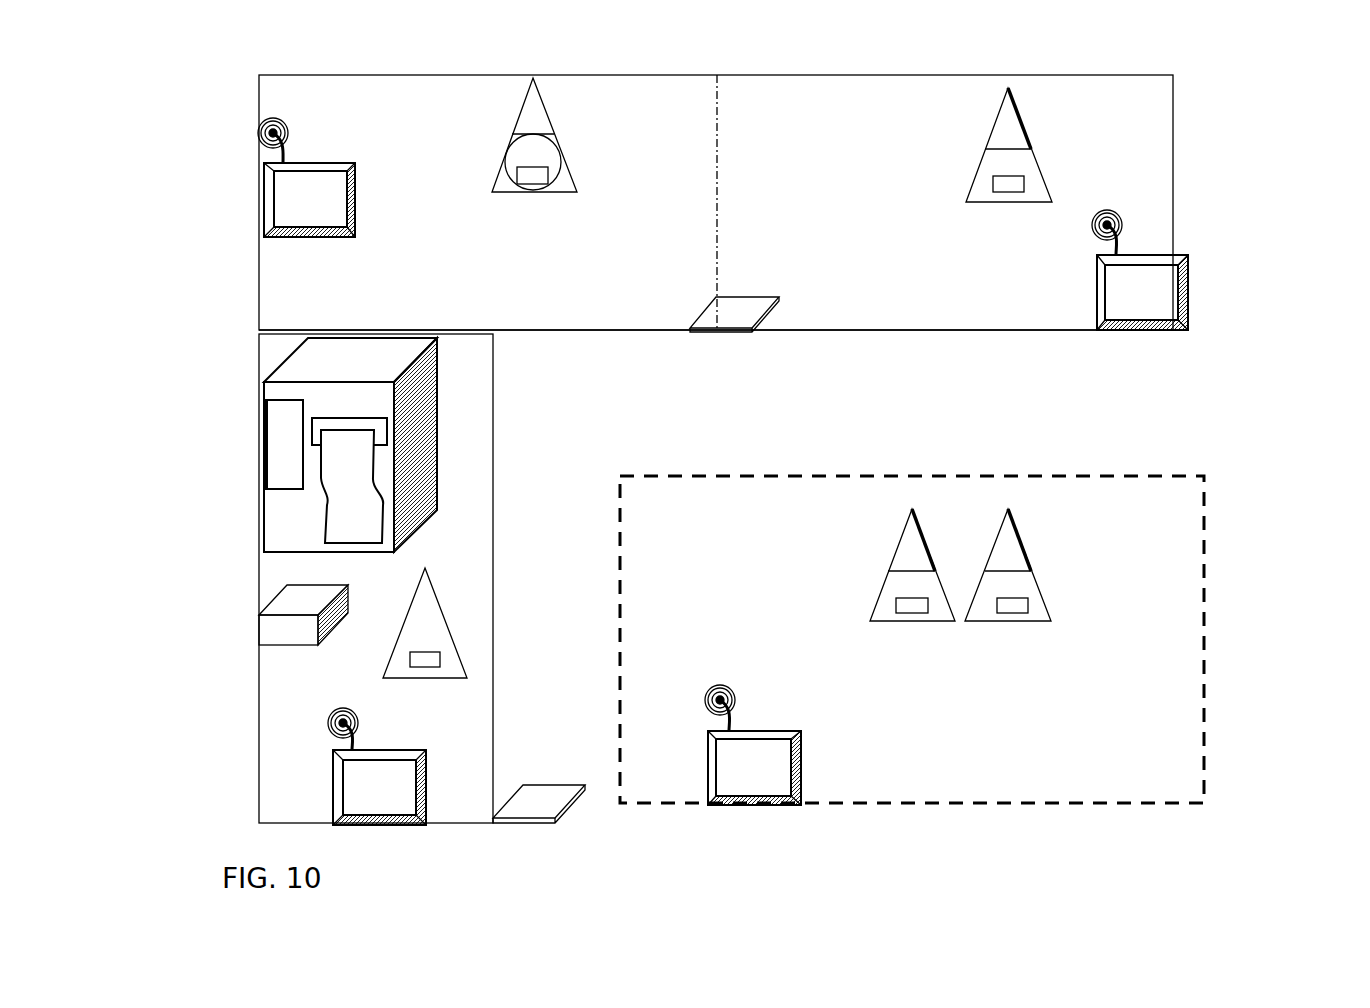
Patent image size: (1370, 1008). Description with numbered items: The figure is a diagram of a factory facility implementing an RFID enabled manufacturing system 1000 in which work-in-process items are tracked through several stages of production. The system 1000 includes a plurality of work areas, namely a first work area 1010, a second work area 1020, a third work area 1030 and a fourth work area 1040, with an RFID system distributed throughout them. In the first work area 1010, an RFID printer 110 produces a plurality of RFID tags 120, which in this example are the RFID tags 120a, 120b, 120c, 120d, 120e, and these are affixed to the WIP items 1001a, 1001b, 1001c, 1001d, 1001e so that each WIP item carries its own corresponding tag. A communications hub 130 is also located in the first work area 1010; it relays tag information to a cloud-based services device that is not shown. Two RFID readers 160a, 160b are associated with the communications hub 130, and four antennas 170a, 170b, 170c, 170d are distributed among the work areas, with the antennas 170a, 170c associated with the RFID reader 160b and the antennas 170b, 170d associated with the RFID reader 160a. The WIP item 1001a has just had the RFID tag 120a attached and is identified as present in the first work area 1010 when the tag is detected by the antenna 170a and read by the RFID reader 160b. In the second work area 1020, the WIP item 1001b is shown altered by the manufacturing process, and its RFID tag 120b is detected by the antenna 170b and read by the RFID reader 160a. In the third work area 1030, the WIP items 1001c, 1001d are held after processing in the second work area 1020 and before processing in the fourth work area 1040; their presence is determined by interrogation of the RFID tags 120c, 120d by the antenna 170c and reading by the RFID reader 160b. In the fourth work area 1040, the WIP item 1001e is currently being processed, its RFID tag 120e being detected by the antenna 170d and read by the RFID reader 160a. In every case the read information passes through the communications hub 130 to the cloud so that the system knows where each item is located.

The RFID enabled manufacturing system 1000 is at (1197, 56).
The first work area 1010 is at (259, 760).
The second work area 1020 is at (1040, 332).
The third work area 1030 is at (1205, 760).
The fourth work area 1040 is at (259, 302).
The RFID printer 110 is at (437, 395).
The RFID tags 120 is at (385, 503).
The communications hub 130 is at (265, 610).
The RFID reader 160a is at (775, 300).
The RFID reader 160b is at (548, 785).
The antenna 170a is at (417, 823).
The antenna 170b is at (1188, 303).
The antenna 170c is at (801, 788).
The antenna 170d is at (355, 218).
The WIP item 1001a is at (462, 662).
The WIP item 1001b is at (1045, 177).
The WIP item 1001c is at (903, 624).
The WIP item 1001d is at (1011, 624).
The WIP item 1001e is at (578, 190).
The RFID tag 120a is at (410, 660).
The RFID tag 120b is at (997, 192).
The RFID tag 120c is at (896, 604).
The RFID tag 120d is at (1030, 606).
The RFID tag 120e is at (535, 184).